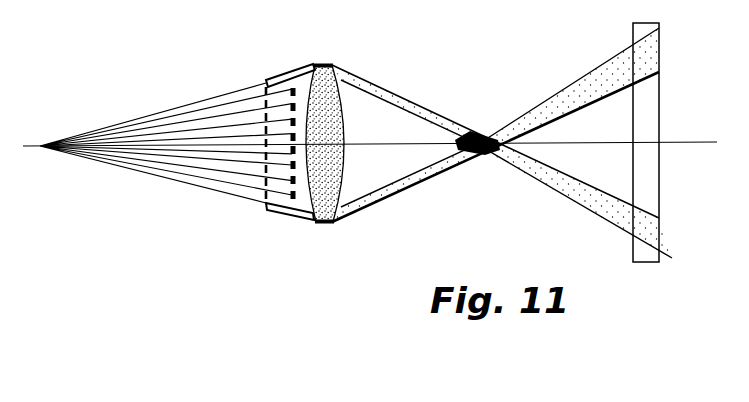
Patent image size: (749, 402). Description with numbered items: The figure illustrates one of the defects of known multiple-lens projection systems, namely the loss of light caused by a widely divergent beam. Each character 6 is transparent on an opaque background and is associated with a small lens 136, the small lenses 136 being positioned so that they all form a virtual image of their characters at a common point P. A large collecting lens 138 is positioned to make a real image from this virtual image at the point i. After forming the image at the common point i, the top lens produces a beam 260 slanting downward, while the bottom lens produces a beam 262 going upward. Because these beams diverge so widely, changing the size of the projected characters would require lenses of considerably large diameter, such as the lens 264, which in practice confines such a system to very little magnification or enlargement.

The character 6 is at (264, 82).
The small lens 136 is at (288, 73).
The large collecting lens 138 is at (338, 128).
The beam 260 is at (540, 184).
The beam 262 is at (546, 97).
The lens of considerably large diameter 264 is at (647, 177).
The common point P is at (159, 143).
The real image i is at (468, 138).